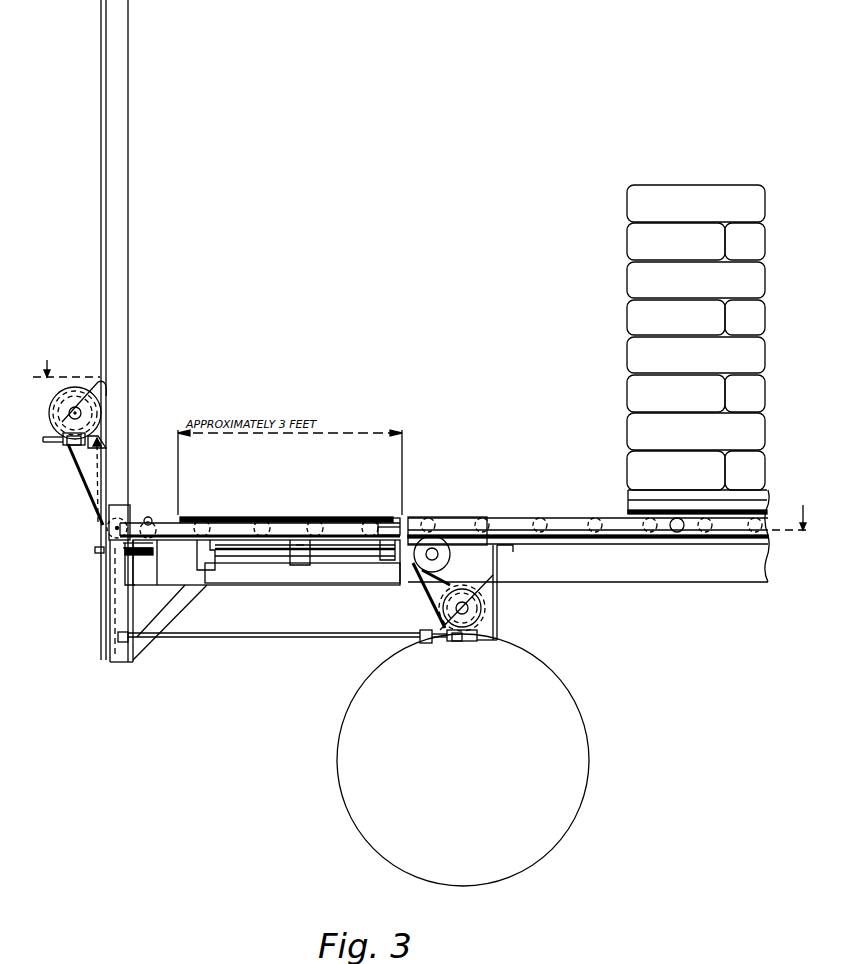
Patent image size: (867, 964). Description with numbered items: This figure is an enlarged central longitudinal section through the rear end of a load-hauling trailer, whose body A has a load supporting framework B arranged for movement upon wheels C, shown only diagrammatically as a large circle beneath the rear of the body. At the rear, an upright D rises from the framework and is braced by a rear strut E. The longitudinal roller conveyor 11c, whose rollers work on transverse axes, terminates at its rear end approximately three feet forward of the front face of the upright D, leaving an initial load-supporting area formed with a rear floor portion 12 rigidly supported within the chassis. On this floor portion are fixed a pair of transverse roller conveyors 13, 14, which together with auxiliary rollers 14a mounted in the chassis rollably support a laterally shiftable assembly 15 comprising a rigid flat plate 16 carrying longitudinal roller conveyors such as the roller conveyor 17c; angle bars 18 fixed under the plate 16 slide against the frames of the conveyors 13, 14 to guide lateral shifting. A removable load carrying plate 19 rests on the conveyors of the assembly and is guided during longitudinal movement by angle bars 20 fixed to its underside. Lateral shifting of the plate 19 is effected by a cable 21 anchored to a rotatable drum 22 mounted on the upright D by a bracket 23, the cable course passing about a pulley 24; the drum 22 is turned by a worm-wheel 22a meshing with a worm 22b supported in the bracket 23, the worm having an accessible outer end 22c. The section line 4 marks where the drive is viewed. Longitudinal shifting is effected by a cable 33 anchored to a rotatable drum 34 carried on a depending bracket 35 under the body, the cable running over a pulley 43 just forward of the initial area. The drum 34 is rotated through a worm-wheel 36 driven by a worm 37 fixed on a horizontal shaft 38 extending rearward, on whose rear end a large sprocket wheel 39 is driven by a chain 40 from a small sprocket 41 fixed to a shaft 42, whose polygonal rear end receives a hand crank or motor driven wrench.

The rear upright D is at (106, 190).
The rear strut E is at (140, 650).
The rotatable drum 22 is at (60, 395).
The worm-wheel 22a is at (80, 395).
The worm 22b is at (90, 480).
The outer end of worm 22c is at (47, 442).
The bracket 23 is at (100, 393).
The section line 4 is at (420, 437).
The cable 21 is at (100, 507).
The pulley 24 is at (107, 523).
The shaft 42 is at (95, 550).
The small sprocket 41 is at (110, 560).
The chain 40 is at (110, 583).
The auxiliary rollers 14a is at (147, 586).
The sprocket wheel 39 is at (115, 668).
The laterally shiftable assembly 15 is at (165, 523).
The roller conveyor 17c is at (223, 527).
The load carrying plate 19 is at (300, 520).
The angle bar 20 is at (407, 520).
The rear floor portion 12 is at (285, 577).
The transverse roller conveyor 14 is at (227, 577).
The flat plate 16 is at (347, 580).
The transverse roller conveyor 13 is at (330, 580).
The angle bar 18 is at (200, 565).
The pulley 43 is at (437, 538).
The roller conveyor 11c is at (522, 523).
The cable 33 is at (447, 580).
The rotatable drum 34 is at (477, 610).
The depending bracket 35 is at (493, 633).
The worm-wheel 36 is at (443, 613).
The worm 37 is at (460, 641).
The horizontal shaft 38 is at (317, 637).
The load supporting framework B is at (688, 573).
The body A is at (640, 598).
The wheels C is at (560, 730).